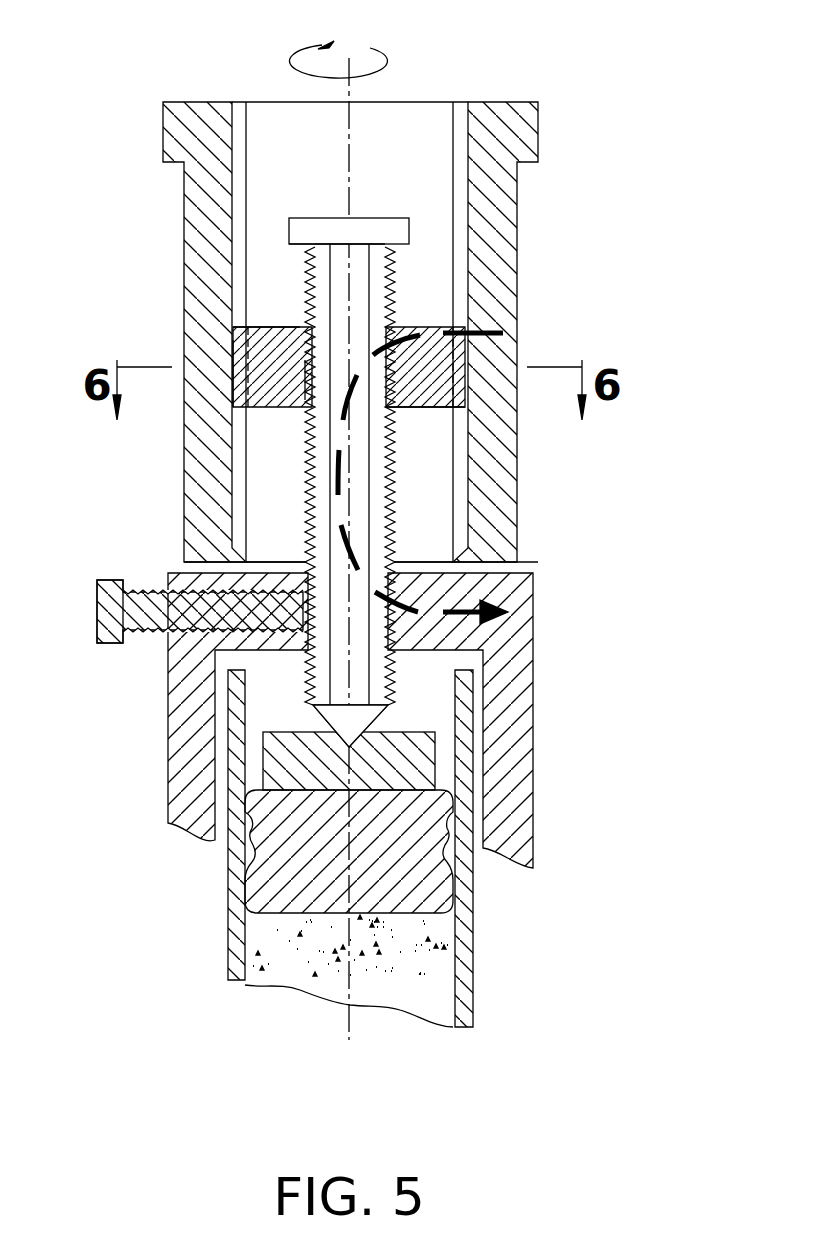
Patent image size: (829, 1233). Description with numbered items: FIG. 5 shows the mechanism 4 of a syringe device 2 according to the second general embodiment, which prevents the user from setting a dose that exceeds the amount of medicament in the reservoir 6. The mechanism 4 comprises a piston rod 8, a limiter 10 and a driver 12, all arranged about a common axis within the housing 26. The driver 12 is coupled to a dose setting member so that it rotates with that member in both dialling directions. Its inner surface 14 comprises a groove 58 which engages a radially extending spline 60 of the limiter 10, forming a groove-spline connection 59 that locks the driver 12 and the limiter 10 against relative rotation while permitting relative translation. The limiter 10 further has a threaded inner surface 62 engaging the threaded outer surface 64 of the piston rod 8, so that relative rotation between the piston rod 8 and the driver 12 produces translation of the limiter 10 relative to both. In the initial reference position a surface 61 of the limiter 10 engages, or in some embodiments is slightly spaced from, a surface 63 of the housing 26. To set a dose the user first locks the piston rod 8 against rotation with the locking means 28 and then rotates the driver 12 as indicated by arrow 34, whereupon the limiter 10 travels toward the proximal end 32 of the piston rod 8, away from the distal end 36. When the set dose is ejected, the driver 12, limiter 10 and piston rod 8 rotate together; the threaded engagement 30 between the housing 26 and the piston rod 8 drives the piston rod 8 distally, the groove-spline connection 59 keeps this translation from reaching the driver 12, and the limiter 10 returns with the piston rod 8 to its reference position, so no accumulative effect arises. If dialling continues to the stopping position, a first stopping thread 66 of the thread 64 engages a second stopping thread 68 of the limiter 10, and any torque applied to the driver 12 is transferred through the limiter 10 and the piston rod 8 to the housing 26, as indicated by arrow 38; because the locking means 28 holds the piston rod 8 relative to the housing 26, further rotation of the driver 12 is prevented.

The syringe device 2 is at (155, 118).
The mechanism 4 is at (133, 163).
The reservoir 6 is at (283, 950).
The piston rod 8 is at (359, 442).
The limiter 10 is at (265, 345).
The driver 12 is at (502, 280).
The inner surface 14 is at (273, 125).
The housing 26 is at (180, 722).
The locking means 28 is at (110, 608).
The threaded engagement 30 is at (364, 716).
The proximal end 32 is at (375, 218).
The arrow 34 is at (397, 62).
The distal end 36 is at (385, 722).
The arrow 38 is at (513, 608).
The groove 58 is at (240, 538).
The groove-spline connection 59 is at (240, 353).
The spline 60 is at (233, 372).
The surface 61 is at (422, 410).
The threaded inner surface 62 is at (290, 375).
The surface 63 is at (423, 548).
The threaded outer surface 64 is at (305, 287).
The first stopping thread 66 is at (293, 248).
The second stopping thread 68 is at (303, 323).